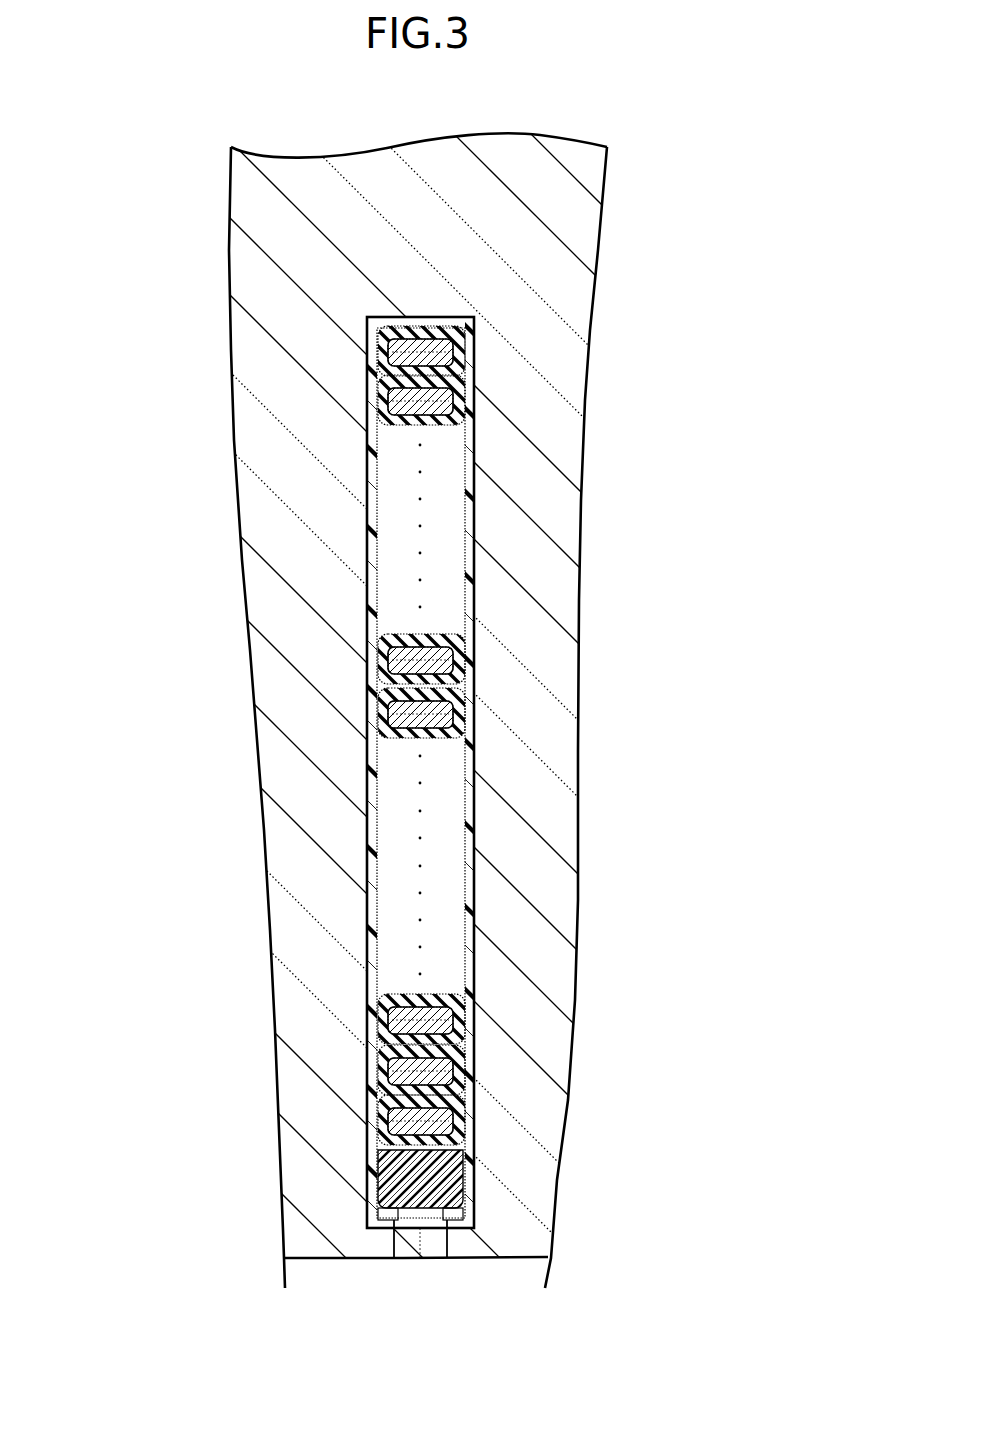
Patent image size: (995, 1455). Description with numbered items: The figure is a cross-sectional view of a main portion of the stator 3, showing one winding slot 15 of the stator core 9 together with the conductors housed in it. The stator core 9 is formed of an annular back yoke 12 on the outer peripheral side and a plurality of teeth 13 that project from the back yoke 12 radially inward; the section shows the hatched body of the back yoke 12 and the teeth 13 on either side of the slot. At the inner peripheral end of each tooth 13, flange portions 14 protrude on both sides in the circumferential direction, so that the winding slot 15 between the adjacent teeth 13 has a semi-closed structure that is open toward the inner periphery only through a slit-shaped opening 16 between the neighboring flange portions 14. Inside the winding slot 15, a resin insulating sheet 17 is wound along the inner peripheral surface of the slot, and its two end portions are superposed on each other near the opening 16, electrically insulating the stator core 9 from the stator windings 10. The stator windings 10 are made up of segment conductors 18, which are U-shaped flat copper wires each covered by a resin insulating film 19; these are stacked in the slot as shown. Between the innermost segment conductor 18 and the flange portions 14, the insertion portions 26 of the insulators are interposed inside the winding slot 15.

The stator 3 is at (400, 727).
The stator core 9 is at (604, 245).
The stator winding 10 is at (472, 355).
The back yoke 12 is at (417, 165).
The teeth 13 is at (553, 525).
The flange portion 14 is at (380, 1245).
The winding slot 15 is at (476, 815).
The opening 16 is at (445, 1245).
The insulating sheet 17 is at (468, 906).
The segment conductor 18 is at (420, 340).
The insulating film 19 is at (390, 343).
The insertion portion 26 is at (443, 1182).